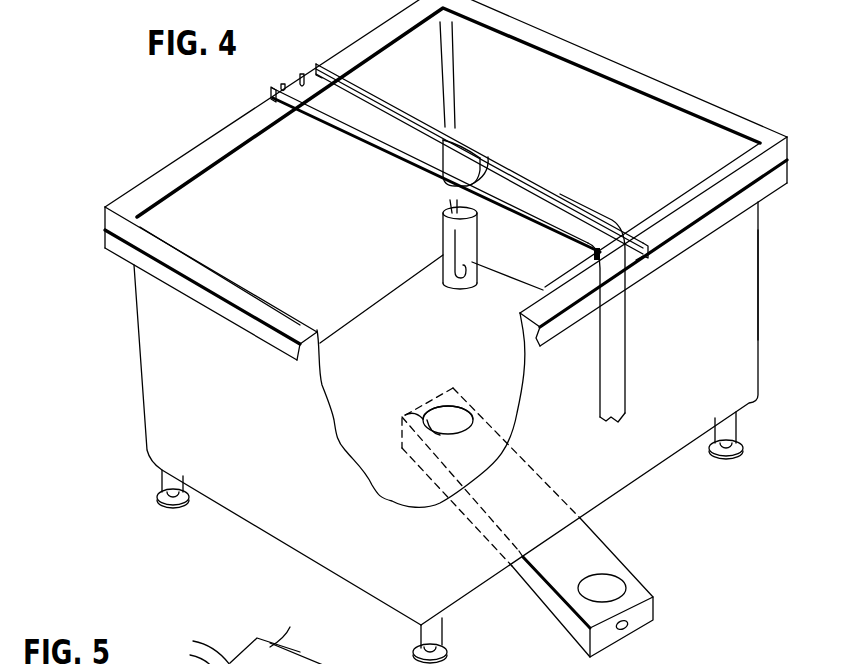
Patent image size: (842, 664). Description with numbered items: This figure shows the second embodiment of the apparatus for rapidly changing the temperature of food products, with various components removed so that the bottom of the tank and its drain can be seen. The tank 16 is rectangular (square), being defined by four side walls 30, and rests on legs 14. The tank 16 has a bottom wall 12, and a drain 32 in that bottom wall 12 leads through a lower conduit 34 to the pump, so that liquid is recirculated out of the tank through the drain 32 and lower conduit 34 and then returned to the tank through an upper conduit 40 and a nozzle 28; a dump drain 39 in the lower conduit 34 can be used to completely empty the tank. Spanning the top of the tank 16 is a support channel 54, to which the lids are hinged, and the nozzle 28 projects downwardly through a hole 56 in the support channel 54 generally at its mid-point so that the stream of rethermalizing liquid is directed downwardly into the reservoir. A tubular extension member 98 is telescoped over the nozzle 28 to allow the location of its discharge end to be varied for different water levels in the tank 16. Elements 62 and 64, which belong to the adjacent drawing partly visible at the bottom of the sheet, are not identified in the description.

In FIG. 4, the bottom wall 12 is at (387, 483).
In FIG. 4, the legs 14 is at (163, 480).
In FIG. 4, the tank 16 is at (755, 331).
In FIG. 4, the nozzle 28 is at (440, 213).
In FIG. 4, the side walls 30 is at (160, 382).
In FIG. 4, the drain 32 is at (410, 413).
In FIG. 4, the lower conduit 34 is at (590, 545).
In FIG. 4, the dump drain 39 is at (625, 628).
In FIG. 4, the upper conduit 40 is at (618, 325).
In FIG. 4, the support channel 54 is at (367, 115).
In FIG. 4, the hole 56 is at (482, 155).
In FIG. 4, the extension member 98 is at (540, 213).
In FIG. 5, the element 62 is at (276, 642).
In FIG. 5, the element 64 is at (197, 649).